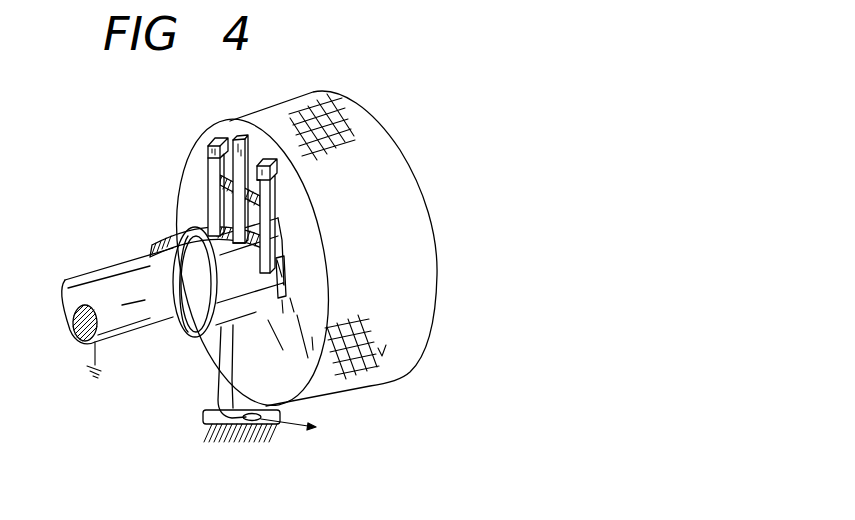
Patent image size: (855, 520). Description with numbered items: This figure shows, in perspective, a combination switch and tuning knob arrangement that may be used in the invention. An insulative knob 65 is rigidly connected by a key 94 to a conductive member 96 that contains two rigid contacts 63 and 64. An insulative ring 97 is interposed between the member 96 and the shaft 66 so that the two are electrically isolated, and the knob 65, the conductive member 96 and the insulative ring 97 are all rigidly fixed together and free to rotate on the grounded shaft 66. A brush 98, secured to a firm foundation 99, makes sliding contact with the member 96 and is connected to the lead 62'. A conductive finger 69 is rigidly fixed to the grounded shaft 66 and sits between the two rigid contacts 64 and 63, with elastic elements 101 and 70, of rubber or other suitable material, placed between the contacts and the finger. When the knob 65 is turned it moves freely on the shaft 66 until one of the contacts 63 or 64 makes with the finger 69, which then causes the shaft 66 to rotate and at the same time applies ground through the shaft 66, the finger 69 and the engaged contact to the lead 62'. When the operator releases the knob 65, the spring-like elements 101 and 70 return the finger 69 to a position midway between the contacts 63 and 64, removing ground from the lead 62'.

The knob 65 is at (377, 114).
The shaft 66 is at (98, 344).
The key 94 is at (283, 274).
The insulative ring 97 is at (146, 254).
The conductive member 96 is at (171, 228).
The elastic element 101 is at (212, 176).
The contact 64 is at (208, 160).
The conductive finger 69 is at (246, 146).
The elastic element 70 is at (259, 197).
The contact 63 is at (274, 185).
The brush 98 is at (232, 355).
The lead 62' is at (365, 439).
The foundation 99 is at (208, 435).